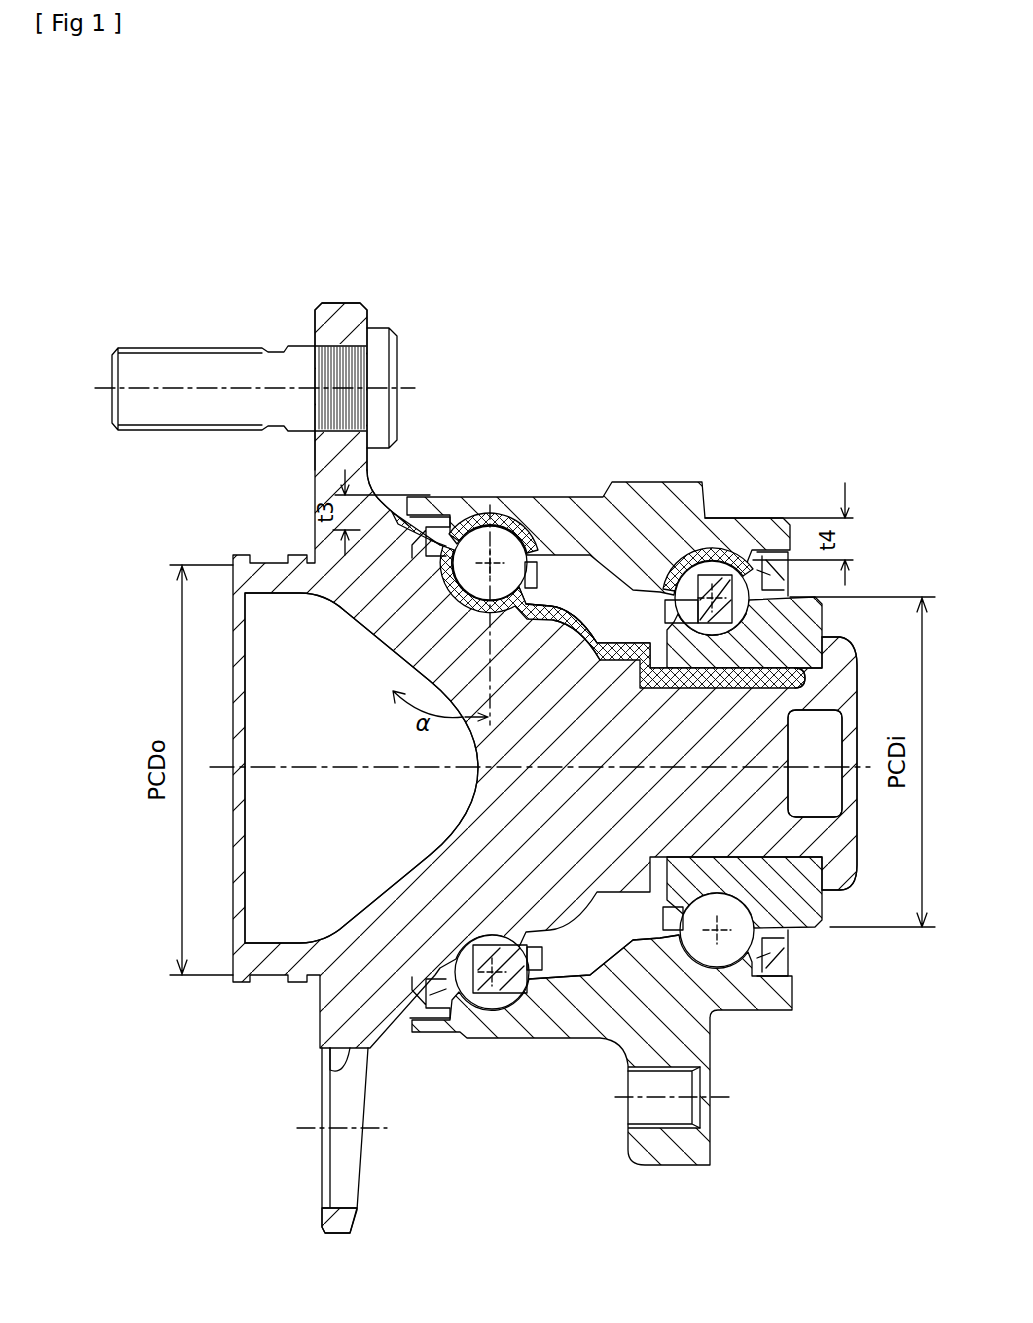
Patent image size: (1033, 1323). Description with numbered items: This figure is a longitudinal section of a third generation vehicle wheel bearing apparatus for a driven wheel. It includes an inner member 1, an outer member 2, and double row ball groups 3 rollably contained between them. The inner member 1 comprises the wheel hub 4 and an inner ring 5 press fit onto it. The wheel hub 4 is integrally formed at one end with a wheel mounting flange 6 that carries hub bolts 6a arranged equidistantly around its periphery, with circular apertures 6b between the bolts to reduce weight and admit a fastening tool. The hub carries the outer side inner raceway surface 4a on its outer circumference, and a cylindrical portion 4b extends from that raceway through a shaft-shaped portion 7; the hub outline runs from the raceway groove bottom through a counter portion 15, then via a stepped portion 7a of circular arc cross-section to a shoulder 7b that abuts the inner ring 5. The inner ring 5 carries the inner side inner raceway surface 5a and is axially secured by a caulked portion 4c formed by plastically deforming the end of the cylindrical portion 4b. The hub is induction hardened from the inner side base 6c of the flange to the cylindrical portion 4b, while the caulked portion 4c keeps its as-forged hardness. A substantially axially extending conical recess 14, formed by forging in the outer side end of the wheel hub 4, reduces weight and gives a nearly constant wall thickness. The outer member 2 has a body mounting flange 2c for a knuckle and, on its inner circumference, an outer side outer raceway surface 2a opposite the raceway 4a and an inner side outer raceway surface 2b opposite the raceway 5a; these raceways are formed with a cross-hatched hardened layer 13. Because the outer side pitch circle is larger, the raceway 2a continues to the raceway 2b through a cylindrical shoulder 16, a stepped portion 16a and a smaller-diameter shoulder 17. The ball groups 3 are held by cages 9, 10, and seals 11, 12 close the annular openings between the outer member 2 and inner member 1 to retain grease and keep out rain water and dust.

The inner member 1 is at (387, 674).
The outer member 2 is at (587, 498).
The outer side outer raceway surface 2a is at (495, 552).
The inner side outer raceway surface 2b is at (713, 582).
The body mounting flange 2c is at (665, 1166).
The rolling element (ball) groups 3 is at (585, 1012).
The wheel hub 4 is at (403, 637).
The inner raceway surface 4a is at (475, 607).
The cylindrical portion 4b is at (797, 672).
The caulked portion 4c is at (842, 662).
The inner ring 5 is at (793, 617).
The inner raceway surface 5a is at (745, 597).
The wheel mounting flange 6 is at (352, 308).
The hub bolts 6a is at (200, 366).
The circular apertures 6b is at (330, 1072).
The inner side base 6c is at (380, 490).
The shaft-shaped portion 7 is at (622, 662).
The stepped portion 7a is at (590, 614).
The shoulder 7b is at (683, 688).
The cage 9 is at (490, 996).
The cage 10 is at (683, 900).
The seal 11 is at (428, 1030).
The seal 12 is at (795, 955).
The hardened layer 13 is at (473, 512).
The conical recess 14 is at (463, 810).
The counter portion 15 is at (523, 620).
The cylindrical shoulder 16 is at (537, 585).
The stepped portion 16a is at (624, 586).
The shoulder 17 is at (660, 597).